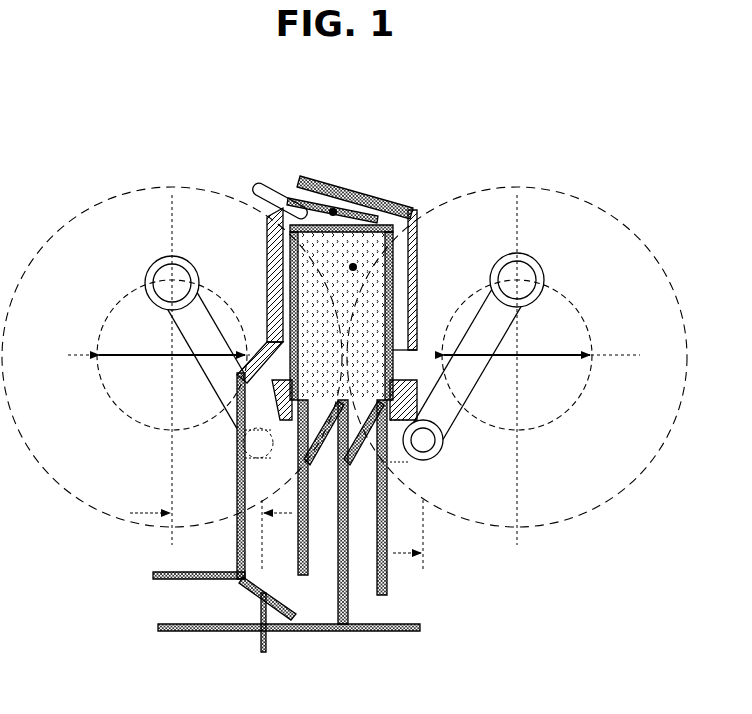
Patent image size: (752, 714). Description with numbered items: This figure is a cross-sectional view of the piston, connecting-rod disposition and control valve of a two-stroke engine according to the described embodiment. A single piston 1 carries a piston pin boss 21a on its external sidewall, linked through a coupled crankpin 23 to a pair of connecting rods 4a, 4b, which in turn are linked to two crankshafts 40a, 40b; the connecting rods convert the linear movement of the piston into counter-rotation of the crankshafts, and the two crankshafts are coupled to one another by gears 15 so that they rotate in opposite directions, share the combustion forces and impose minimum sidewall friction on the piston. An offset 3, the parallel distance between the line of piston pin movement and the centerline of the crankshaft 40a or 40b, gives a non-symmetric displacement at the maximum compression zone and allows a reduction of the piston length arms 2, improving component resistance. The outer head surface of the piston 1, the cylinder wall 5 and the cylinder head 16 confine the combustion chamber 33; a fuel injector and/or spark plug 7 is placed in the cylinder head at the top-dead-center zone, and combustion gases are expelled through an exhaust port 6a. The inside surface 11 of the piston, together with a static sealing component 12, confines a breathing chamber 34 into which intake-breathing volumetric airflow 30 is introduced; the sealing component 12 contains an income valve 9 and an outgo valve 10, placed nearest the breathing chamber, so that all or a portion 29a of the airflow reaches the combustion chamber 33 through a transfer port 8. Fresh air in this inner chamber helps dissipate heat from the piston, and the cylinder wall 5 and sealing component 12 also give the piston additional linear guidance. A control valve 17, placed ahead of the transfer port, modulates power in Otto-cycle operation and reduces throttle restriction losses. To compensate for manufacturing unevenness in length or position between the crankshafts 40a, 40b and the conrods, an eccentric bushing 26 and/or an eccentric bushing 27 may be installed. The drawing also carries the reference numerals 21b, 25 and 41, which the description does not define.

The piston 1 is at (386, 188).
The piston length arms 2 is at (520, 512).
The offset 3 is at (128, 513).
The connecting rod 4a is at (172, 340).
The connecting rod 4b is at (592, 346).
The cylinder wall 5 is at (443, 350).
The exhaust port 6a is at (432, 238).
The fuel injector and/or spark plug 7 is at (272, 186).
The transfer port 8 is at (247, 348).
The income valve 9 is at (430, 472).
The outgo valve 10 is at (237, 480).
The inside surface 11 is at (98, 352).
The static sealing component 12 is at (393, 608).
The gears 15 is at (262, 192).
The cylinder head 16 is at (318, 178).
The control valve 17 is at (273, 597).
The piston pin boss 21a is at (250, 440).
The right pivot ring 21b is at (445, 444).
The crankpin 23 is at (150, 270).
The right ring 25 is at (548, 272).
The eccentric bushing 26 is at (524, 254).
The eccentric bushing 27 is at (452, 432).
The portion of intake-breathing airflow 29a is at (180, 603).
The intake-breathing volumetric airflow 30 is at (422, 628).
The combustion chamber 33 is at (350, 178).
The breathing chamber 34 is at (420, 216).
The crankshaft 40a is at (178, 322).
The crankshaft 40b is at (505, 322).
The arm length 41 is at (172, 358).